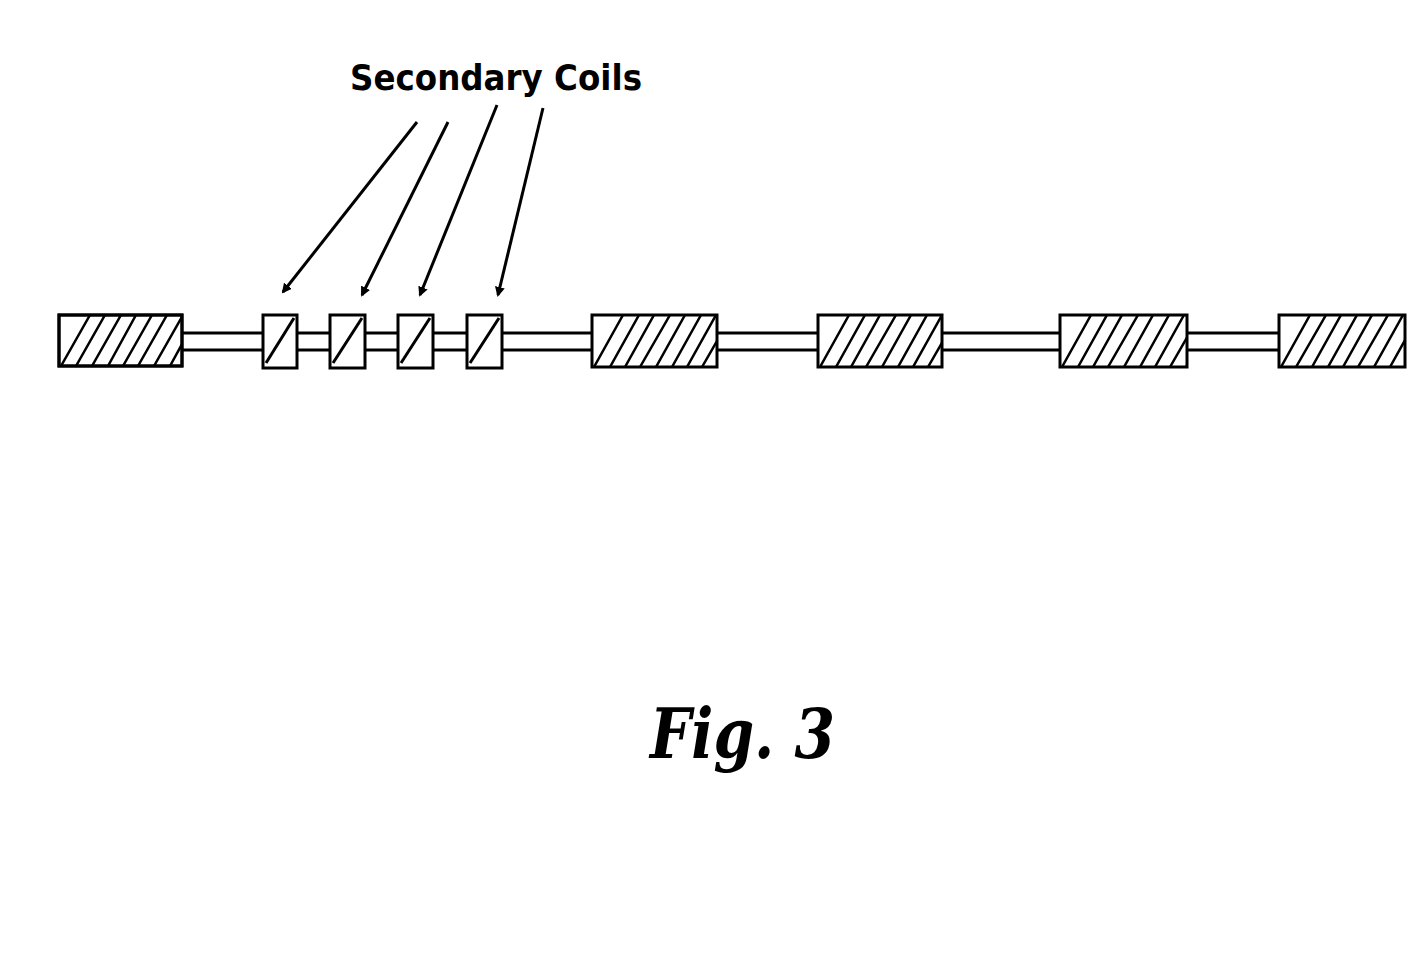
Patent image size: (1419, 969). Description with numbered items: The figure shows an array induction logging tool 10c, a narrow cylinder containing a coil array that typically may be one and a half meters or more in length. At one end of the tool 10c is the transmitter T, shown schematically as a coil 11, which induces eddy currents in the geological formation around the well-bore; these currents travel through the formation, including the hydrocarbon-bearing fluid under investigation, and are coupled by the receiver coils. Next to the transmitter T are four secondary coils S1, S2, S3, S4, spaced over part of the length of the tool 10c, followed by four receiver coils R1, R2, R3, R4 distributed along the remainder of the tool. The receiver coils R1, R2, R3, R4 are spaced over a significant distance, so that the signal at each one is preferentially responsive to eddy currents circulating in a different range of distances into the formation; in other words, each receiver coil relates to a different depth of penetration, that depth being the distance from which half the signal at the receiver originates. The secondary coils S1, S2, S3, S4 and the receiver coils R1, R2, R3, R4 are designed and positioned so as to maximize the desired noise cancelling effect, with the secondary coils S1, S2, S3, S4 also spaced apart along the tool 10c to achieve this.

The coil 11 is at (125, 315).
The array tool 10c is at (775, 345).
The transmitter T is at (144, 378).
The secondary coil S1 is at (280, 368).
The secondary coil S2 is at (348, 368).
The secondary coil S3 is at (418, 368).
The secondary coil S4 is at (487, 368).
The receiver coil R1 is at (662, 368).
The receiver coil R2 is at (885, 368).
The receiver coil R3 is at (1130, 368).
The receiver coil R4 is at (1350, 368).